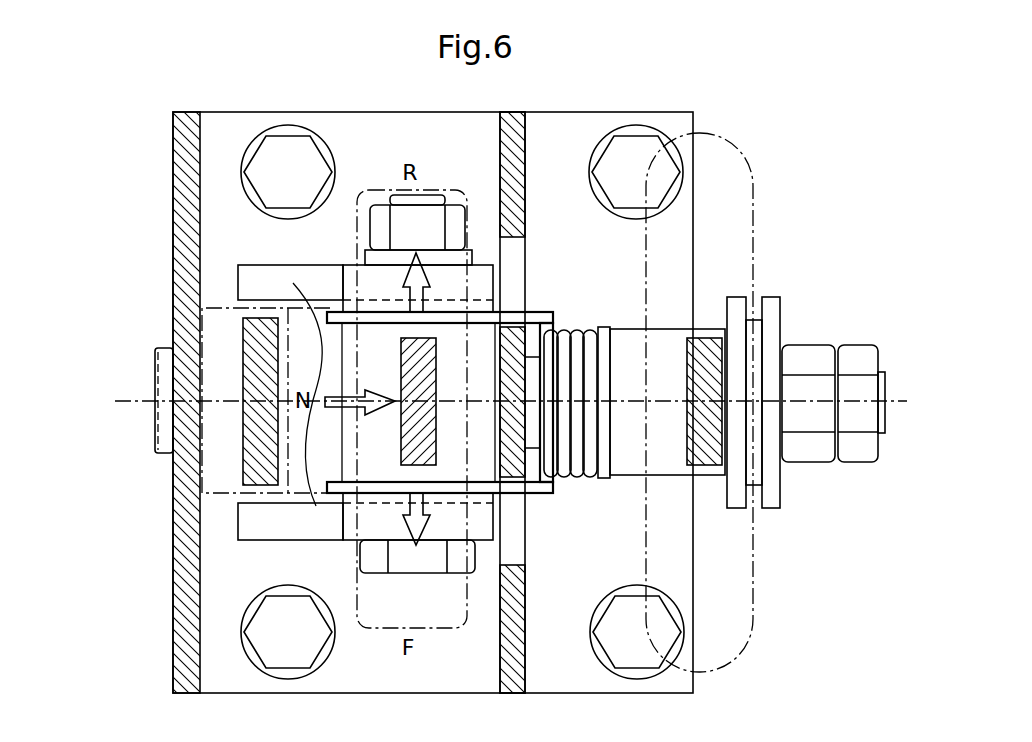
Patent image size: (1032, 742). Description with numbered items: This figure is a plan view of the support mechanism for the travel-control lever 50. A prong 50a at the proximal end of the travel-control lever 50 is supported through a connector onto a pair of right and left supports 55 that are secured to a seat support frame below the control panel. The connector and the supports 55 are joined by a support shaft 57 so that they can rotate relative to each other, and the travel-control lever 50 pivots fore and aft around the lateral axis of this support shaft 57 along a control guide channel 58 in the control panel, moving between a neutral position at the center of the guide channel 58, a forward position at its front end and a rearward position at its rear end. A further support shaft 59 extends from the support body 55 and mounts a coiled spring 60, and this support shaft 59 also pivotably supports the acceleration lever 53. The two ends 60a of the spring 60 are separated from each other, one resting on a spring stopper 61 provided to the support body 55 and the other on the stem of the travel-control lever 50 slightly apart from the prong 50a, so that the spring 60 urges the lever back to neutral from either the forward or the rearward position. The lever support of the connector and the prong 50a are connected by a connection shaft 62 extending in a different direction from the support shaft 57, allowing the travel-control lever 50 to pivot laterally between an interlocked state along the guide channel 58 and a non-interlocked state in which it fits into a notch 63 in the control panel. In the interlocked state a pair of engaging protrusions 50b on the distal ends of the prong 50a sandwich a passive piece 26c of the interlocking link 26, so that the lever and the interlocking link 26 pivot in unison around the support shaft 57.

The travel-control lever 50 is at (401, 390).
The prong 50a is at (482, 517).
The engaging protrusions 50b is at (240, 284).
The acceleration lever 53 is at (713, 338).
The supports 55 is at (173, 600).
The support shaft 57 is at (150, 383).
The control guide channel 58 is at (358, 215).
The support shaft 59 is at (884, 380).
The coiled spring 60 is at (573, 323).
The spring ends 60a is at (373, 306).
The spring stopper 61 is at (512, 300).
The connection shaft 62 is at (425, 197).
The notch 63 is at (303, 312).
The passive piece 26c is at (235, 472).
The interlocking link 26 is at (161, 401).